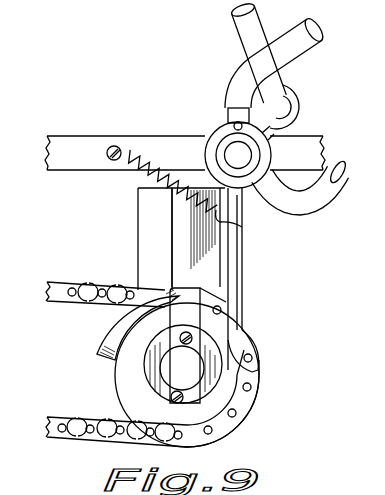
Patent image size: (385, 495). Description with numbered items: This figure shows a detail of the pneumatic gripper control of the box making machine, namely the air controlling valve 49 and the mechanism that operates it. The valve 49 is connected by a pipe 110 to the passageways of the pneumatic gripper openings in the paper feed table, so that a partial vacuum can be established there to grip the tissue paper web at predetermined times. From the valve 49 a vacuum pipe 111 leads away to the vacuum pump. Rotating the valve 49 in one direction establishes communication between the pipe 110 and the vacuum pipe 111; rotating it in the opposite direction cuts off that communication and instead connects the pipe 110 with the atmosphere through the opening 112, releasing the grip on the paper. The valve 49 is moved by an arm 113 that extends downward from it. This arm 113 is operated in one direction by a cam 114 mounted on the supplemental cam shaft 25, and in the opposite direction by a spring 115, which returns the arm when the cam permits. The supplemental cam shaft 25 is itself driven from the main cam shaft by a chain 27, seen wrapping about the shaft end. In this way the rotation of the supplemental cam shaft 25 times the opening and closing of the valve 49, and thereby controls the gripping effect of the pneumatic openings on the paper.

The supplemental cam shaft 25 is at (162, 368).
The chain 27 is at (70, 434).
The air controlling valve 49 is at (222, 132).
The pipe 110 is at (288, 43).
The vacuum pipe 111 is at (245, 32).
The opening 112 is at (232, 121).
The arm 113 is at (241, 272).
The cam 114 is at (185, 290).
The spring 115 is at (138, 188).